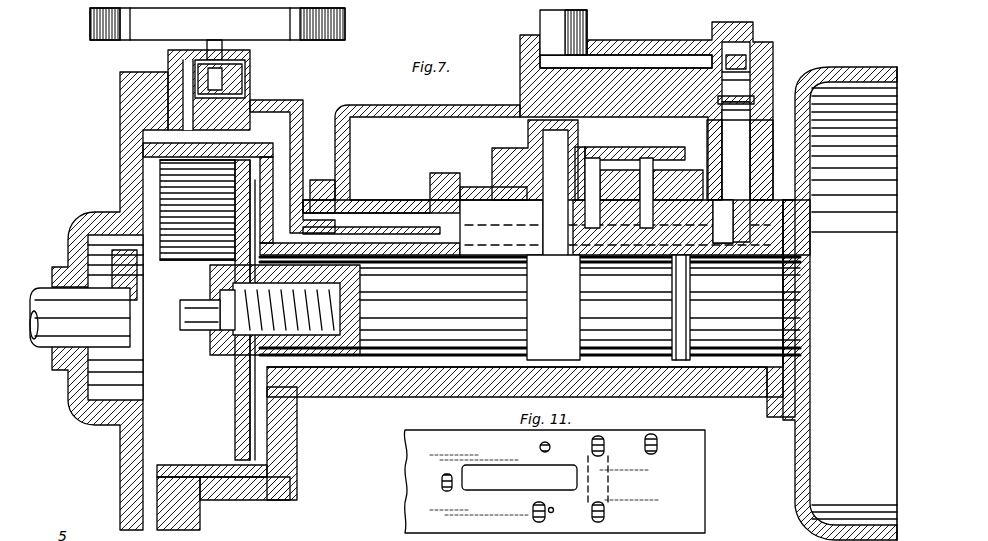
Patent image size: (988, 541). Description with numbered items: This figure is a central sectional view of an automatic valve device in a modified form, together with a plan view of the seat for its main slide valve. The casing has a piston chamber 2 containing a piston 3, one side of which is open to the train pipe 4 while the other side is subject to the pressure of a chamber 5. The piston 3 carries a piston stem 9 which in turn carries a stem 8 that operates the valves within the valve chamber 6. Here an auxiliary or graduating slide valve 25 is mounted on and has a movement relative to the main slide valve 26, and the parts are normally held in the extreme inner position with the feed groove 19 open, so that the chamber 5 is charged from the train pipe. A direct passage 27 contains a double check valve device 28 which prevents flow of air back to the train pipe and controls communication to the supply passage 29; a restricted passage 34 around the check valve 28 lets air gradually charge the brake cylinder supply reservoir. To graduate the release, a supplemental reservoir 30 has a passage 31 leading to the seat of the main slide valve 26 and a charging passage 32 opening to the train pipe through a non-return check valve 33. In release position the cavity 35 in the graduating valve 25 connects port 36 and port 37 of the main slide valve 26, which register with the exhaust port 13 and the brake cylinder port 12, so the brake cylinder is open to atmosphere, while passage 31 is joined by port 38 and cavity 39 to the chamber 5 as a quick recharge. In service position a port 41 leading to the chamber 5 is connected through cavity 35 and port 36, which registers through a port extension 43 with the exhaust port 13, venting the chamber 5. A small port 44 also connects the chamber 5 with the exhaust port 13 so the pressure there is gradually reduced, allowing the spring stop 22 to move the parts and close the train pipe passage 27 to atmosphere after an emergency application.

In FIG. 7, the piston chamber 2 is at (210, 470).
In FIG. 7, the piston 3 is at (245, 395).
In FIG. 7, the train pipe 4 is at (52, 328).
In FIG. 7, the chamber 5 is at (760, 367).
In FIG. 7, the valve chamber 6 is at (635, 128).
In FIG. 7, the stem 8 is at (545, 204).
In FIG. 7, the piston stem 9 is at (478, 300).
In FIG. 7, the brake cylinder port 12 is at (655, 215).
In FIG. 11, the brake cylinder port 12 is at (660, 446).
In FIG. 7, the exhaust port 13 is at (612, 213).
In FIG. 11, the exhaust port 13 is at (600, 502).
In FIG. 7, the feed groove 19 is at (270, 158).
In FIG. 7, the spring stop 22 is at (205, 315).
In FIG. 7, the graduating slide valve 25 is at (498, 160).
In FIG. 7, the main slide valve 26 is at (450, 176).
In FIG. 7, the direct passage 27 is at (370, 235).
In FIG. 11, the direct passage 27 is at (532, 510).
In FIG. 7, the double check valve device 28 is at (760, 104).
In FIG. 7, the supply passage 29 is at (640, 58).
In FIG. 7, the supplemental reservoir 30 is at (350, 28).
In FIG. 7, the passage 31 is at (408, 218).
In FIG. 11, the passage 31 is at (440, 492).
In FIG. 7, the charging passage 32 is at (185, 90).
In FIG. 7, the non-return check valve 33 is at (210, 70).
In FIG. 7, the restricted passage 34 is at (758, 78).
In FIG. 7, the cavity 35 is at (636, 160).
In FIG. 7, the port 36 is at (590, 175).
In FIG. 7, the port 37 is at (660, 176).
In FIG. 7, the port 38 is at (468, 187).
In FIG. 7, the cavity 39 is at (535, 168).
In FIG. 11, the port 41 is at (540, 447).
In FIG. 7, the port extension 43 is at (612, 190).
In FIG. 11, the small port 44 is at (554, 508).